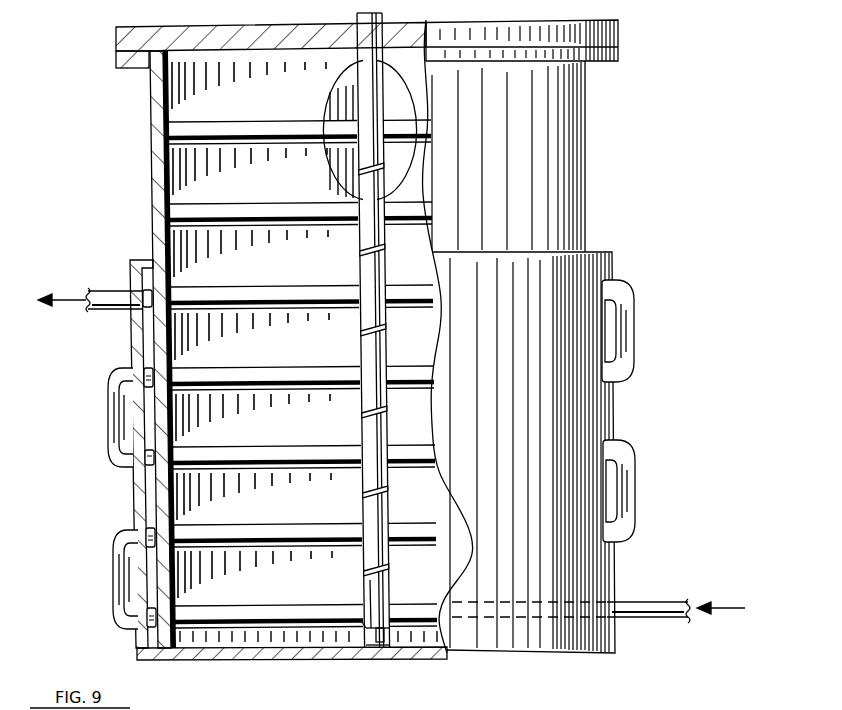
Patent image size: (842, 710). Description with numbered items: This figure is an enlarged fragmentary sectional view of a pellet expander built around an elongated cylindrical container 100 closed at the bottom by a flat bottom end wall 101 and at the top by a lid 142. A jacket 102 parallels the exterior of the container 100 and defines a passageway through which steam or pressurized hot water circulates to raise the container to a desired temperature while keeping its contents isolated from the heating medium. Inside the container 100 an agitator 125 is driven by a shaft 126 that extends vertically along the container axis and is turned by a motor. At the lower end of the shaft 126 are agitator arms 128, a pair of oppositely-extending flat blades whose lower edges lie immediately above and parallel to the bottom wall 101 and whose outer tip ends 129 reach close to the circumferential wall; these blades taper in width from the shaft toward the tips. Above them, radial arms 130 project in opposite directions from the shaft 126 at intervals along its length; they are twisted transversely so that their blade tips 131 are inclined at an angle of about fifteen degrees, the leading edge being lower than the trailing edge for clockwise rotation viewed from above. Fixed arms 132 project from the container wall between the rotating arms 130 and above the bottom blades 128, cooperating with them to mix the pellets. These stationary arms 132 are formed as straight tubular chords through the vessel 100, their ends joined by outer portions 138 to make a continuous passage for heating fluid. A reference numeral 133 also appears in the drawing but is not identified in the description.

The cylindrical container 100 is at (565, 170).
The bottom end wall 101 is at (290, 651).
The jacket 102 is at (148, 345).
The agitator 125 is at (356, 626).
The shaft 126 is at (378, 597).
The agitator arms 128 is at (388, 632).
The outer tip ends 129 is at (380, 643).
The radial arms 130 is at (382, 331).
The blade tips 131 is at (362, 330).
The fixed arms 132 is at (167, 135).
The rotor 133 is at (345, 78).
The outer portions 138 is at (620, 338).
The lid 142 is at (126, 40).